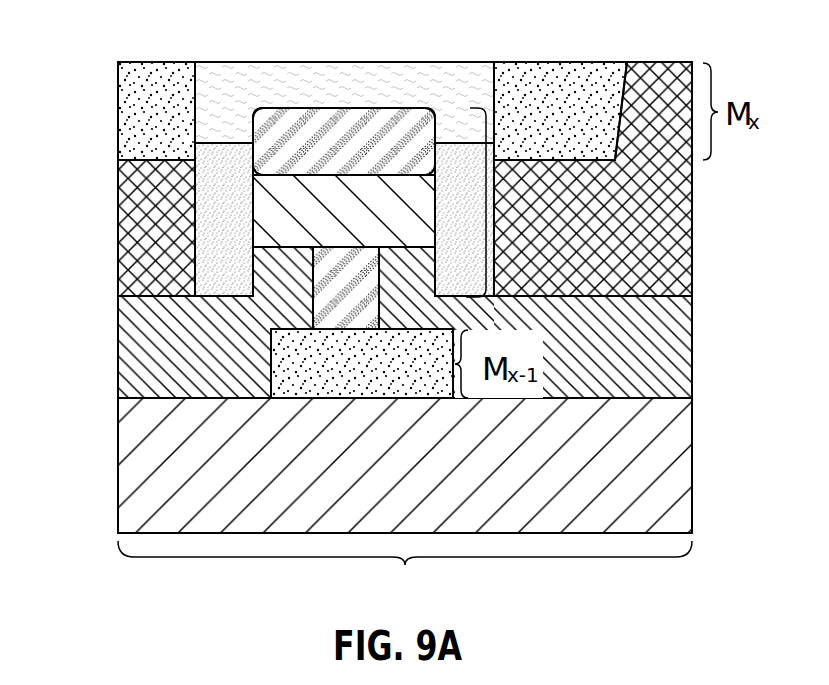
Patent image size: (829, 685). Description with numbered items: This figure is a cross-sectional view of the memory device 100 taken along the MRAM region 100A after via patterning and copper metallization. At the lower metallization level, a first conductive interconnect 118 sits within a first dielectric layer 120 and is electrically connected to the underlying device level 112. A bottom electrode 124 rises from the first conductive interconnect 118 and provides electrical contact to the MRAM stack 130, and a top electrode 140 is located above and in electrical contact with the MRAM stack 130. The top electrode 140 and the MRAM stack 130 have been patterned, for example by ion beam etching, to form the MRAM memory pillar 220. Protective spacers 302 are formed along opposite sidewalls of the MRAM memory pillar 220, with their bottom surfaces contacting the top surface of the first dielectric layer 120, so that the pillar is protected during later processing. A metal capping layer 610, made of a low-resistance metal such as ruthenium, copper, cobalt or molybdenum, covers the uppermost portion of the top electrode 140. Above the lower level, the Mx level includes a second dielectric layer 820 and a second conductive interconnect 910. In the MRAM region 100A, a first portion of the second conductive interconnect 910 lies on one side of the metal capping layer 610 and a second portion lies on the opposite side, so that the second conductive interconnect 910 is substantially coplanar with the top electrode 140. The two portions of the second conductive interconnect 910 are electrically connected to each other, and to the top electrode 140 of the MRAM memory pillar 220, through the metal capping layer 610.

The memory device 100 is at (58, 77).
The MRAM region 100A is at (405, 575).
The device level 112 is at (427, 484).
The first conductive interconnect 118 is at (393, 382).
The first dielectric layer 120 is at (220, 364).
The bottom electrode 124 is at (372, 304).
The MRAM stack 130 is at (371, 222).
The top electrode 140 is at (371, 157).
The MRAM memory pillar 220 is at (553, 221).
The protective spacers 302 is at (466, 164).
The metal capping layer 610 is at (372, 101).
The second dielectric layer 820 is at (180, 237).
The second conductive interconnect 910 is at (180, 126).